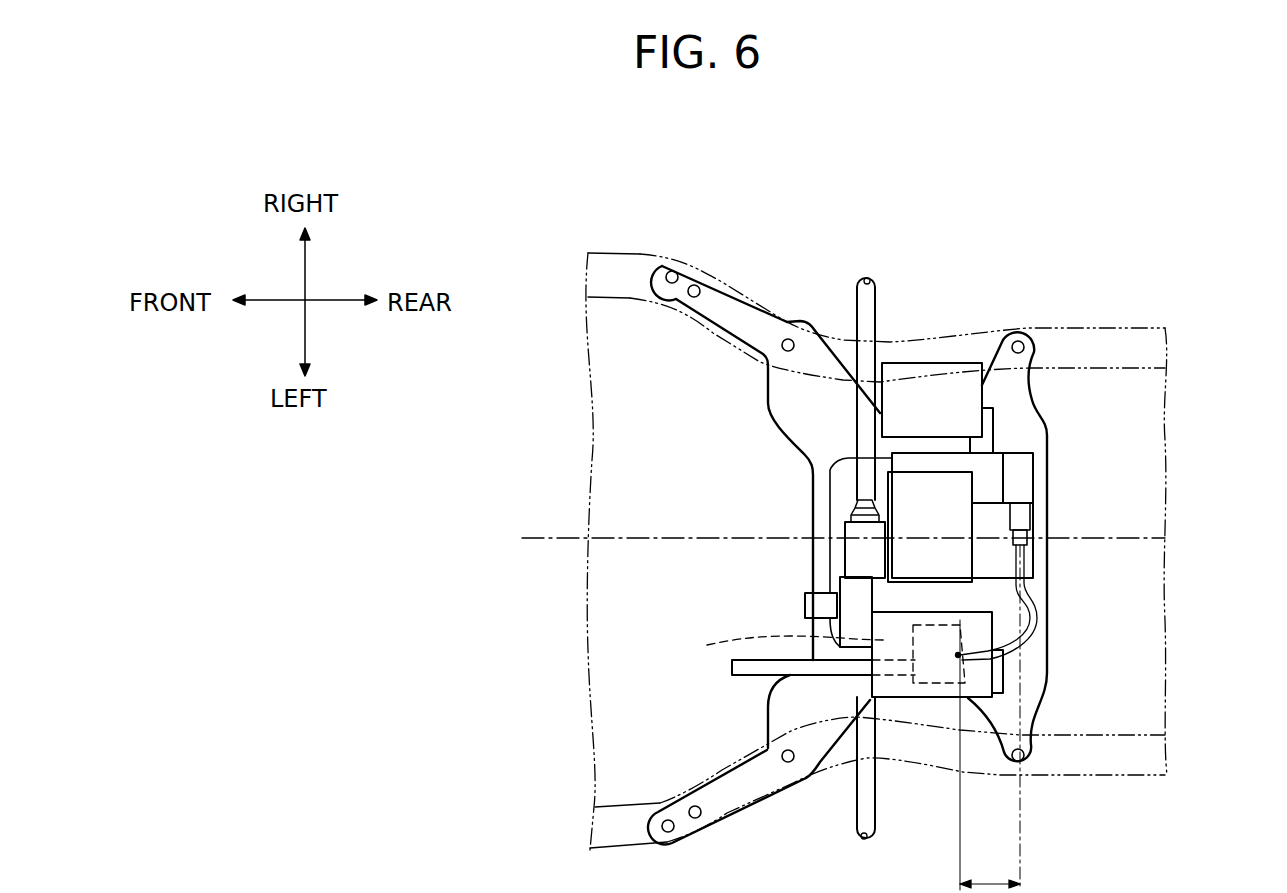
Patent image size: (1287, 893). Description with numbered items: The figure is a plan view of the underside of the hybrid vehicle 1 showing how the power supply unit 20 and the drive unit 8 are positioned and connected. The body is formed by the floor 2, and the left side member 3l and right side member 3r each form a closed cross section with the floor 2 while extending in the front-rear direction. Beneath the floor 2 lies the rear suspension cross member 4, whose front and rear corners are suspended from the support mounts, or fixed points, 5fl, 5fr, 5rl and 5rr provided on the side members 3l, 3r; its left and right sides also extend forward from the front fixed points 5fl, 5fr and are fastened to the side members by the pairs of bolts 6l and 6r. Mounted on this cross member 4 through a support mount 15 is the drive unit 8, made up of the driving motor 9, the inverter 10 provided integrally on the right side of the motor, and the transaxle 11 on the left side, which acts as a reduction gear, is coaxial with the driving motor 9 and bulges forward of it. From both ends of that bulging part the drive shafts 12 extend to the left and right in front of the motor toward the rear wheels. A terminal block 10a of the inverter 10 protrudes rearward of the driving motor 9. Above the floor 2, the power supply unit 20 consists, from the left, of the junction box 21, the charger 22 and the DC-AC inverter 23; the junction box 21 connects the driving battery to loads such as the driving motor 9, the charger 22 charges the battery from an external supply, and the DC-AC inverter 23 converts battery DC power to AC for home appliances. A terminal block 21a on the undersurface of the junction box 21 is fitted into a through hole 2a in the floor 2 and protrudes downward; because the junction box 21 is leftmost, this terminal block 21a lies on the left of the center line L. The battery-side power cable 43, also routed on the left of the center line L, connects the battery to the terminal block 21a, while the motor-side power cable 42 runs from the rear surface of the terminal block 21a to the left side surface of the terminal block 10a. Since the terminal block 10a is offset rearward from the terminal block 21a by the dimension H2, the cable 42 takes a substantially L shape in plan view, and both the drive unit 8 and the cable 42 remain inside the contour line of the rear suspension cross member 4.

The hybrid vehicle 1 is at (1091, 229).
The floor 2 is at (1168, 398).
The through hole 2a is at (948, 683).
The right side member 3r is at (1126, 322).
The left side member 3l is at (1125, 778).
The rear suspension cross member 4 is at (1035, 432).
The front right support mount 5fr is at (790, 338).
The rear right support mount 5rr is at (1016, 339).
The front left support mount 5fl is at (789, 763).
The rear left support mount 5rl is at (1013, 771).
The right bolts 6r is at (673, 268).
The left bolts 6l is at (675, 838).
The drive unit 8 is at (1080, 547).
The driving motor 9 is at (982, 562).
The inverter 10 is at (988, 492).
The terminal block of inverter 10a is at (1025, 468).
The transaxle 11 is at (1003, 622).
The drive shafts 12 is at (877, 300).
The support mount 15 is at (812, 607).
The power supply unit 20 is at (827, 530).
The junction box 21 is at (887, 622).
The terminal block of junction box 21a is at (768, 650).
The charger 22 is at (905, 490).
The DC-AC inverter 23 is at (893, 422).
The motor-side power cable 42 is at (1022, 552).
The battery-side power cable 43 is at (740, 678).
The center line L is at (548, 534).
The offset dimension H2 is at (990, 717).